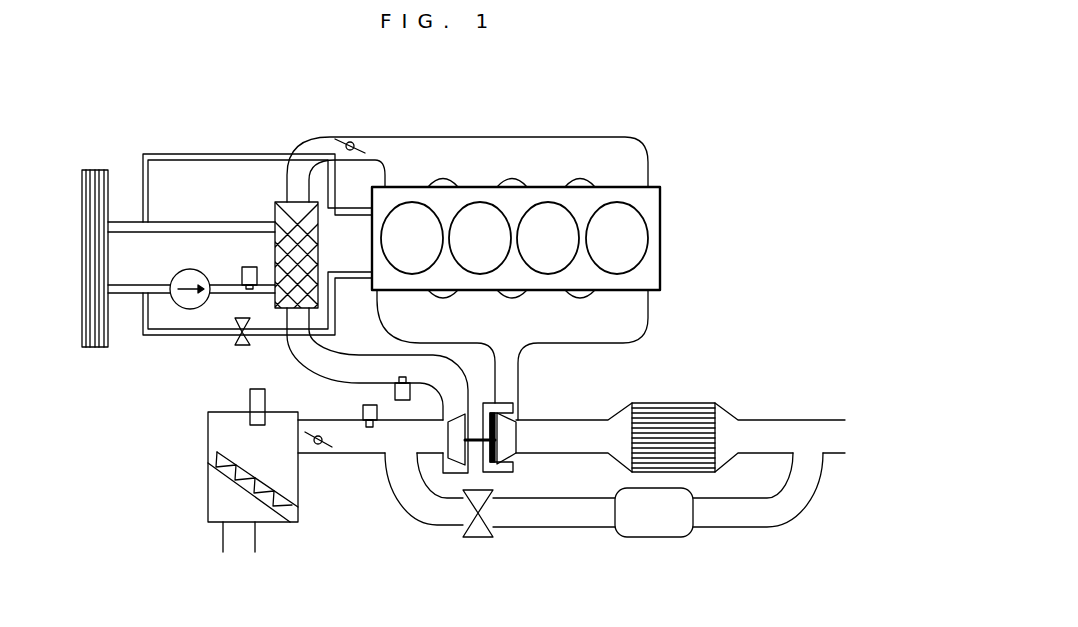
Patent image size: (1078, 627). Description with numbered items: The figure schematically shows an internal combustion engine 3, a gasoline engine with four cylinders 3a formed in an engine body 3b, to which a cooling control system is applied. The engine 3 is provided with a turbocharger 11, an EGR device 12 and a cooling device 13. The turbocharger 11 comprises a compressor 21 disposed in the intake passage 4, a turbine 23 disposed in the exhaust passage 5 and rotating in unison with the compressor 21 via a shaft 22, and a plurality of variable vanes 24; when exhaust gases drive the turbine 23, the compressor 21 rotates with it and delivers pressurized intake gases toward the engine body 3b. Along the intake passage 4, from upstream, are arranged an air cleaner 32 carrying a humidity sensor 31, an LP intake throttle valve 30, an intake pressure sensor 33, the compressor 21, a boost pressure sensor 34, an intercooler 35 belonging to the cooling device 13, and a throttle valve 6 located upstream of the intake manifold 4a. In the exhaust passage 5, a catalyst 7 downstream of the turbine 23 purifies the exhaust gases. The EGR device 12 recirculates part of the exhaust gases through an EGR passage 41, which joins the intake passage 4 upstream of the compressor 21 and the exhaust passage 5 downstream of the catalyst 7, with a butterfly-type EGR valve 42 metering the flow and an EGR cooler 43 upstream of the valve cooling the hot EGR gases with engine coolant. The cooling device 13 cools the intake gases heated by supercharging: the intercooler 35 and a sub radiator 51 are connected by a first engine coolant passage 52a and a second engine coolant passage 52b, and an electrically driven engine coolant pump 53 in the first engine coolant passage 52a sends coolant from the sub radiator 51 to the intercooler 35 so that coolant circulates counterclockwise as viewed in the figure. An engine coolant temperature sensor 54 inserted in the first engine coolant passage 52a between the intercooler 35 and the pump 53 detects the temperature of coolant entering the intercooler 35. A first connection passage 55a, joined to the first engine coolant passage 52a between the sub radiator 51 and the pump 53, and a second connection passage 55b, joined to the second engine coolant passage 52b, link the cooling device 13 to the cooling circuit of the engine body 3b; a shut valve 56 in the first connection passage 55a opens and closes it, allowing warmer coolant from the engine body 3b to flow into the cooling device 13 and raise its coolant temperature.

The internal combustion engine 3 is at (513, 249).
The cylinders 3a is at (492, 203).
The engine body 3b is at (660, 208).
The intake passage 4 is at (348, 455).
The intake manifold 4a is at (500, 137).
The exhaust passage 5 is at (570, 420).
The throttle valve 6 is at (347, 142).
The catalyst 7 is at (687, 403).
The turbocharger 11 is at (428, 445).
The EGR device 12 is at (604, 532).
The cooling device 13 is at (214, 235).
The compressor 21 is at (455, 457).
The shaft 22 is at (475, 442).
The turbine 23 is at (510, 480).
The variable vanes 24 is at (513, 405).
The LP intake throttle valve 30 is at (324, 453).
The humidity sensor 31 is at (265, 400).
The air cleaner 32 is at (207, 486).
The intake pressure sensor 33 is at (358, 409).
The boost pressure sensor 34 is at (403, 401).
The intercooler 35 is at (275, 240).
The EGR passage 41 is at (578, 528).
The EGR valve 42 is at (478, 539).
The EGR cooler 43 is at (658, 538).
The sub radiator 51 is at (81, 187).
The first engine coolant passage 52a is at (127, 295).
The second engine coolant passage 52b is at (123, 221).
The engine coolant pump 53 is at (173, 270).
The engine coolant temperature sensor 54 is at (240, 268).
The first connection passage 55a is at (192, 337).
The second connection passage 55b is at (243, 153).
The shut valve 56 is at (238, 341).